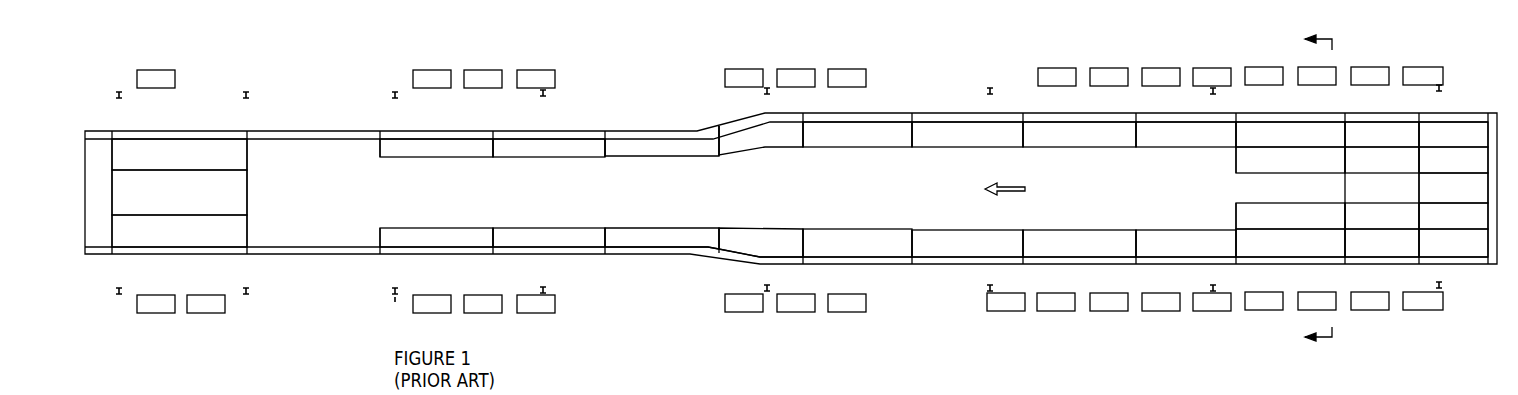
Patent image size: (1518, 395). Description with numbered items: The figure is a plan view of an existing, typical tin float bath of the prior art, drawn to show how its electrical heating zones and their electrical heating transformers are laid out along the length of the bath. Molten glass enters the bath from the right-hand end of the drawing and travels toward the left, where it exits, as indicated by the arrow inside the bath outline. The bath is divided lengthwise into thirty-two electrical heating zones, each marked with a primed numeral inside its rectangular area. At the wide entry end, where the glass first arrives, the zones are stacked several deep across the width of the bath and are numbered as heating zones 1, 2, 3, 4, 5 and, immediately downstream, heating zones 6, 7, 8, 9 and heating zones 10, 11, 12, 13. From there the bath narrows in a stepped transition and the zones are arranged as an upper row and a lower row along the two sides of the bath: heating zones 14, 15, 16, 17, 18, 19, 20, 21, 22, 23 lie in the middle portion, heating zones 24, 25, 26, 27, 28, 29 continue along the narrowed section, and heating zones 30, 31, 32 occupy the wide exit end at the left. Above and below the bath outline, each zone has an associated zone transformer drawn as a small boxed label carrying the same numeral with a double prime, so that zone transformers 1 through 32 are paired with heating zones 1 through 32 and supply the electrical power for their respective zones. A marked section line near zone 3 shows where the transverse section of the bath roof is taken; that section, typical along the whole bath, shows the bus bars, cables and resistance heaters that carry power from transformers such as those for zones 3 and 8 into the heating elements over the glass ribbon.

The electrical heating zone and zone transformer 1 is at (1445, 269).
The electrical heating zone and zone transformer 2 is at (1419, 256).
The electrical heating zone and zone transformer 3 is at (1389, 188).
The electrical heating zone and zone transformer 4 is at (1445, 120).
The electrical heating zone and zone transformer 5 is at (1419, 108).
The electrical heating zone and zone transformer 6 is at (1332, 269).
The electrical heating zone and zone transformer 7 is at (1306, 257).
The electrical heating zone and zone transformer 8 is at (1358, 120).
The electrical heating zone and zone transformer 9 is at (1332, 108).
The electrical heating zone and zone transformer 10 is at (1243, 270).
The electrical heating zone and zone transformer 11 is at (1217, 257).
The electrical heating zone and zone transformer 12 is at (1269, 120).
The electrical heating zone and zone transformer 13 is at (1243, 108).
The electrical heating zone and zone transformer 14 is at (1136, 270).
The electrical heating zone and zone transformer 15 is at (1163, 108).
The electrical heating zone and zone transformer 16 is at (1061, 270).
The electrical heating zone and zone transformer 17 is at (1079, 108).
The electrical heating zone and zone transformer 18 is at (925, 271).
The electrical heating zone and zone transformer 19 is at (925, 109).
The electrical heating zone and zone transformer 20 is at (844, 270).
The electrical heating zone and zone transformer 21 is at (844, 109).
The electrical heating zone and zone transformer 22 is at (761, 270).
The electrical heating zone and zone transformer 23 is at (761, 112).
The electrical heating zone and zone transformer 24 is at (618, 270).
The electrical heating zone and zone transformer 25 is at (618, 113).
The electrical heating zone and zone transformer 26 is at (534, 270).
The electrical heating zone and zone transformer 27 is at (534, 113).
The electrical heating zone and zone transformer 28 is at (436, 270).
The electrical heating zone and zone transformer 29 is at (436, 113).
The electrical heating zone and zone transformer 30 is at (179, 264).
The electrical heating zone and zone transformer 31 is at (179, 241).
The electrical heating zone and zone transformer 32 is at (179, 120).